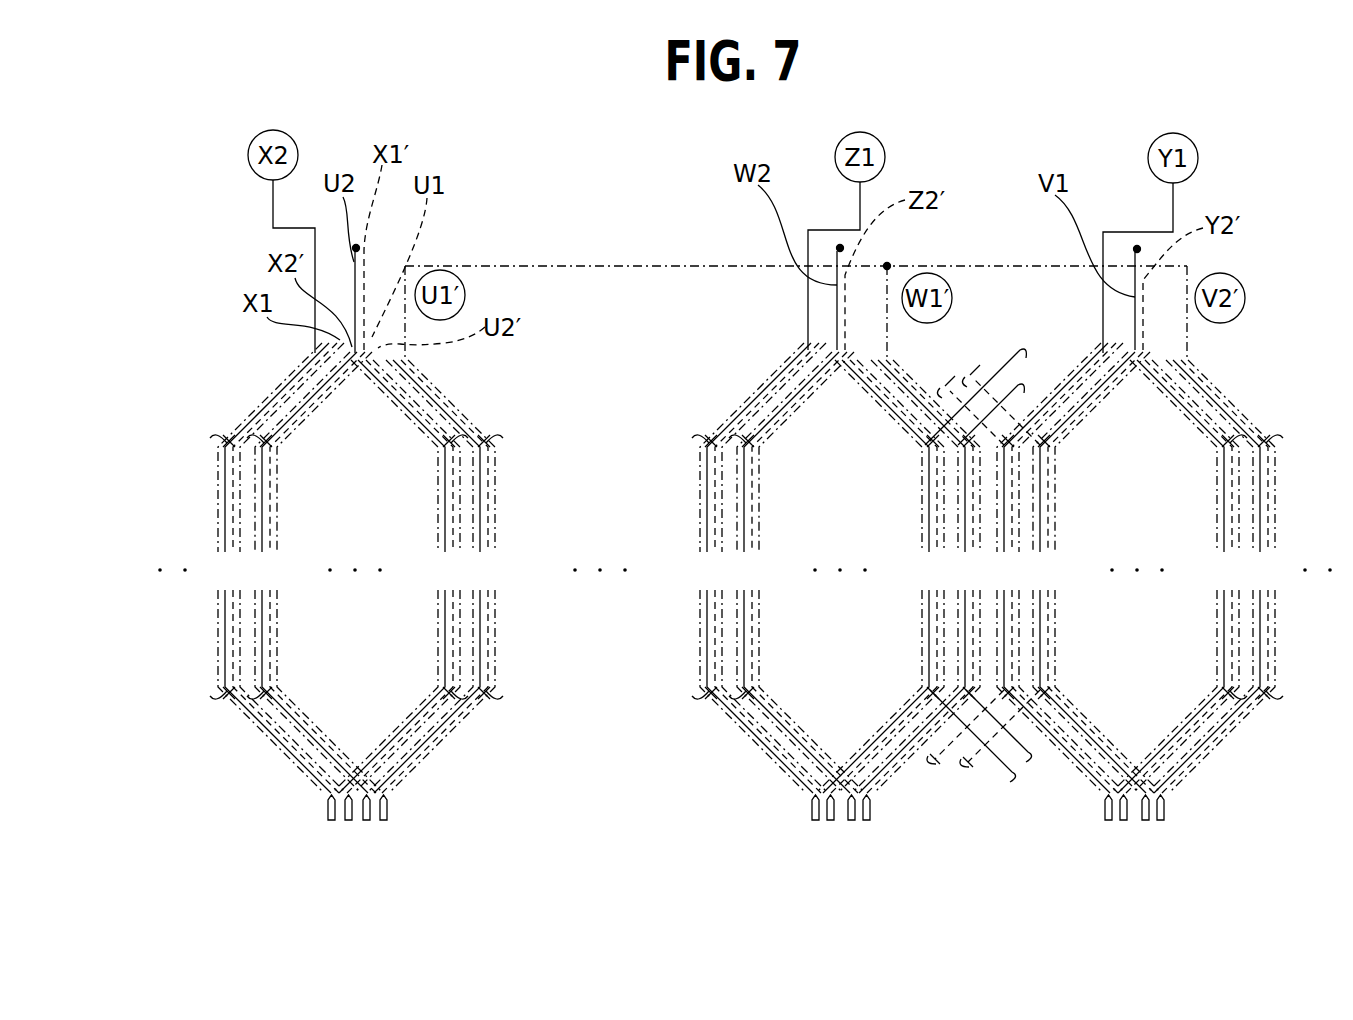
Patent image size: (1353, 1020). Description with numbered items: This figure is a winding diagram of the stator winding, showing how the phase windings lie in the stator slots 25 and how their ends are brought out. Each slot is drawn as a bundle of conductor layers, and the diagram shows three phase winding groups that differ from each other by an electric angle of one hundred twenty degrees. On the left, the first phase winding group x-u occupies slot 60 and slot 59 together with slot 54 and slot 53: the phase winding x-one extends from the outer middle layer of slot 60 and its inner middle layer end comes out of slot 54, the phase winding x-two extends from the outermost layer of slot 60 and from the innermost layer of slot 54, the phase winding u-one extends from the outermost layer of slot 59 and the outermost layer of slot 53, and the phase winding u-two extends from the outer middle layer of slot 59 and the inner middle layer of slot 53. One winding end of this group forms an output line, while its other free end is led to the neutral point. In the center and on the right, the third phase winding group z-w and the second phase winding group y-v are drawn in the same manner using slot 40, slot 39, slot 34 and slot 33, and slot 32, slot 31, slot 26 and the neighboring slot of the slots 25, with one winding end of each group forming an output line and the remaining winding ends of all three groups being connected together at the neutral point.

The slot number sixty 60 is at (278, 568).
The slot number fifty-nine 59 is at (315, 572).
The slot number fifty-four 54 is at (400, 576).
The slot number fifty-three 53 is at (435, 576).
The slot number forty 40 is at (760, 568).
The slot number thirty-nine 39 is at (797, 572).
The slot number thirty-four 34 is at (882, 576).
The slot number thirty-three 33 is at (918, 576).
The slot number thirty-two 32 is at (1059, 568).
The slot number thirty-one 31 is at (1095, 572).
The slot number twenty-six 26 is at (1179, 576).
The slots 25 is at (1215, 576).